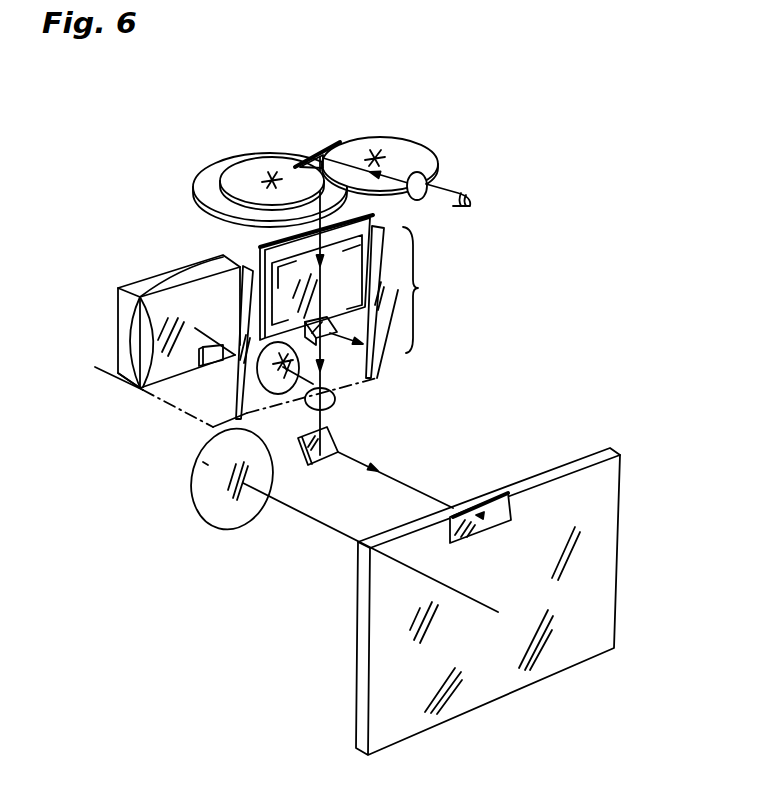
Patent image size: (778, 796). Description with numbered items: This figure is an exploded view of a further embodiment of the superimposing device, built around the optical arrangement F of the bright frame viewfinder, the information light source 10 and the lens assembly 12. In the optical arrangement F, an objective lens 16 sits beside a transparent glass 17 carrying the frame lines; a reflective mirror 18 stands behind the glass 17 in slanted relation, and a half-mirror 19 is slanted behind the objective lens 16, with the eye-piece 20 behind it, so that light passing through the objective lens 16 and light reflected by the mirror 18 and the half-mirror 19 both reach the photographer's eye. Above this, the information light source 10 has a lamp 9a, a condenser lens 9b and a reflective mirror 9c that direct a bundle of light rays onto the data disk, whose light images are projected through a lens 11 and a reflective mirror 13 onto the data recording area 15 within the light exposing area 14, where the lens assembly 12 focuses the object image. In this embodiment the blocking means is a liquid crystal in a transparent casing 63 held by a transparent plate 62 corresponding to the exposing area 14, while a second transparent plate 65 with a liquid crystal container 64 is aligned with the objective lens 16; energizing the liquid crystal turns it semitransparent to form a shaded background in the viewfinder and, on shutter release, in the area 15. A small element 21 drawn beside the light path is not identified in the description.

The information light source 10 is at (377, 78).
The lamp 9a is at (470, 196).
The condenser lens 9b is at (422, 173).
The reflective mirror 9c is at (306, 158).
The transparent glass 17 is at (373, 216).
The reflective mirror 18 is at (381, 229).
The optical arrangement F is at (419, 290).
The objective lens 16 is at (140, 283).
The half-mirror 19 is at (250, 270).
The liquid crystal container 64 is at (211, 367).
The transparent plate 65 is at (143, 390).
The eye-piece 20 is at (275, 386).
The lens 11 is at (335, 401).
The prism 21 is at (328, 338).
The reflective mirror 13 is at (320, 458).
The lens assembly 12 is at (247, 508).
The light exposing area 14 is at (525, 673).
The transparent plate 62 is at (605, 585).
The data recording area 15 is at (505, 504).
The transparent casing 63 is at (495, 513).